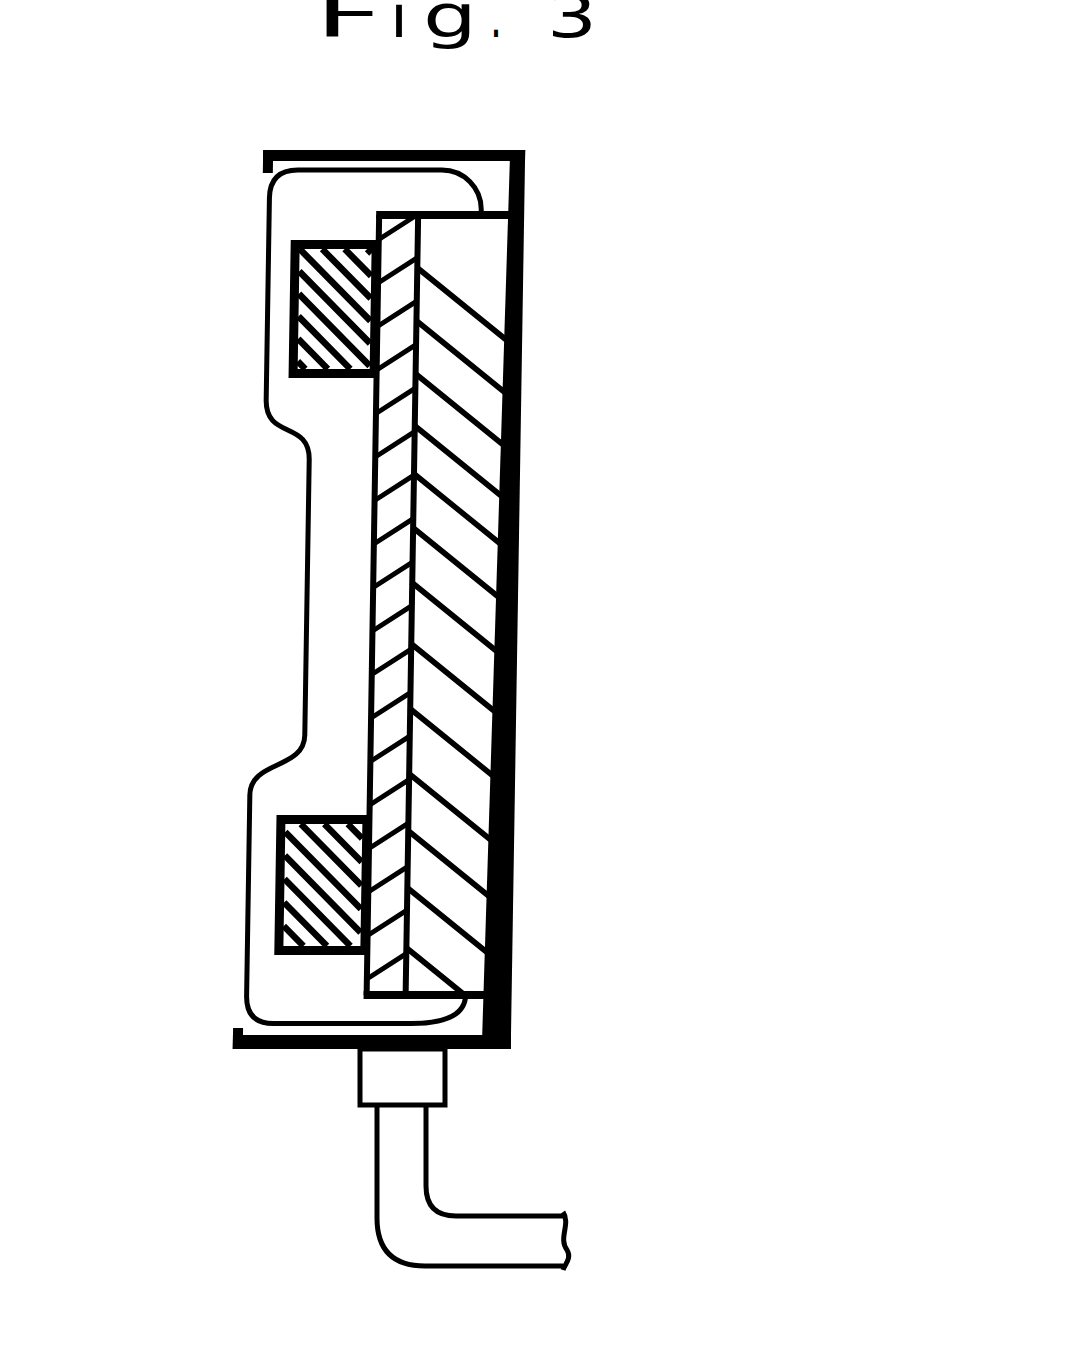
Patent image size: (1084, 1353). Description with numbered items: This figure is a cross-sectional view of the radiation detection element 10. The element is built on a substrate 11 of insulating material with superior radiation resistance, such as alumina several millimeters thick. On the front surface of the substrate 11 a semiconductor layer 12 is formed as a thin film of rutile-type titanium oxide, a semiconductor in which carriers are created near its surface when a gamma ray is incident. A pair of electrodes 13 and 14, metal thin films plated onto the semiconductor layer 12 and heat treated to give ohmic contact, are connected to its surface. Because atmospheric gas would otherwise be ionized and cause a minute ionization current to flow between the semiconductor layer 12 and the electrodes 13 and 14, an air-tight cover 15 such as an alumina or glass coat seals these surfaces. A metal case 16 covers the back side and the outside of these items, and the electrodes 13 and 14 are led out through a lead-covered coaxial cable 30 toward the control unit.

The radiation detection element 10 is at (748, 224).
The substrate 11 is at (518, 517).
The semiconductor layer 12 is at (393, 757).
The electrode 13 is at (292, 316).
The electrode 14 is at (252, 876).
The air-tight cover 15 is at (306, 603).
The metal case 16 is at (510, 1003).
The lead-covered coaxial cable 30 is at (470, 1213).